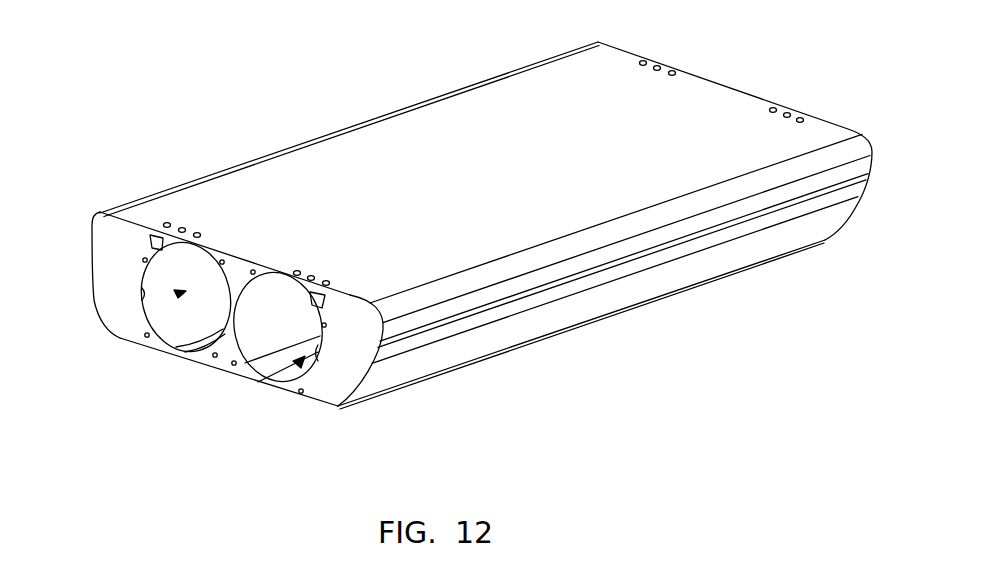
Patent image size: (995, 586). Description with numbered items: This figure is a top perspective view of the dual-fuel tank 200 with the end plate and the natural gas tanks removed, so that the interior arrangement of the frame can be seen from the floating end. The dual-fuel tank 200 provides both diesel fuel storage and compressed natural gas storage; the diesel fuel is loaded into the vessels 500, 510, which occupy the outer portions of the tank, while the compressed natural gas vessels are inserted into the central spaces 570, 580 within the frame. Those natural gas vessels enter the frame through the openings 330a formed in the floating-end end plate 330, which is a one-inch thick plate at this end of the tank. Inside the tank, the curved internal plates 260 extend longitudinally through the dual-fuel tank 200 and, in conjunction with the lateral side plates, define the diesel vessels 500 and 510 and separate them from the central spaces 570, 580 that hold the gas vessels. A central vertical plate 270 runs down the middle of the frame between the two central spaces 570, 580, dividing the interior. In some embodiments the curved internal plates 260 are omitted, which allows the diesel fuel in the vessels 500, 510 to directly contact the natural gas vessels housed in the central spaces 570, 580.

The dual-fuel tank 200 is at (256, 102).
The diesel fuel vessel 500 is at (644, 289).
The diesel fuel vessel 510 is at (184, 216).
The floating-end end plate 330 is at (338, 392).
The openings 330a is at (142, 295).
The curved internal plates 260 is at (167, 315).
The central vertical plate 270 is at (251, 340).
The central space 580 is at (177, 293).
The central space 570 is at (300, 362).